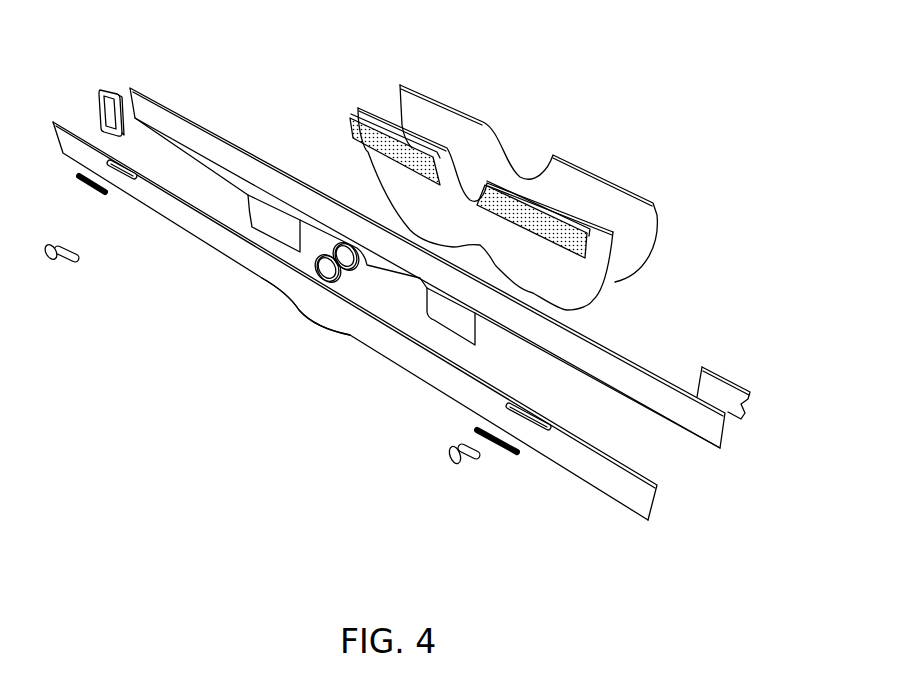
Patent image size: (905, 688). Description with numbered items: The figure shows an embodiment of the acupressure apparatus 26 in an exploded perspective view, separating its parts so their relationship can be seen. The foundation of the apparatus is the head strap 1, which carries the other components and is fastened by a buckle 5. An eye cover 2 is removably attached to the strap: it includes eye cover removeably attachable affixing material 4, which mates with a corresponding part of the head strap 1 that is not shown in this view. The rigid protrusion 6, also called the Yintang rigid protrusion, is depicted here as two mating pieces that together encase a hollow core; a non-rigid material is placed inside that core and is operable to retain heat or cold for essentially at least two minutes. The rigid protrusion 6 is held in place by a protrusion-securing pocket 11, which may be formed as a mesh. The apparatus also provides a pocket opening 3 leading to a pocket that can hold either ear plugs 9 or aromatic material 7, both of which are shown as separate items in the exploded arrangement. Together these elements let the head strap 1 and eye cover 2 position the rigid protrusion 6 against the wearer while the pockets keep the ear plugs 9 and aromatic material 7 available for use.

The acupressure apparatus 26 is at (102, 27).
The head strap 1 is at (193, 133).
The eye cover 2 is at (403, 105).
The pocket opening 3 is at (537, 432).
The eye cover removeably attachable affixing material 4 is at (353, 127).
The buckle 5 is at (106, 88).
The rigid protrusion 6 is at (343, 282).
The aromatic material 7 is at (248, 210).
The ear plugs 9 is at (50, 262).
The protrusion-securing pocket 11 is at (300, 302).